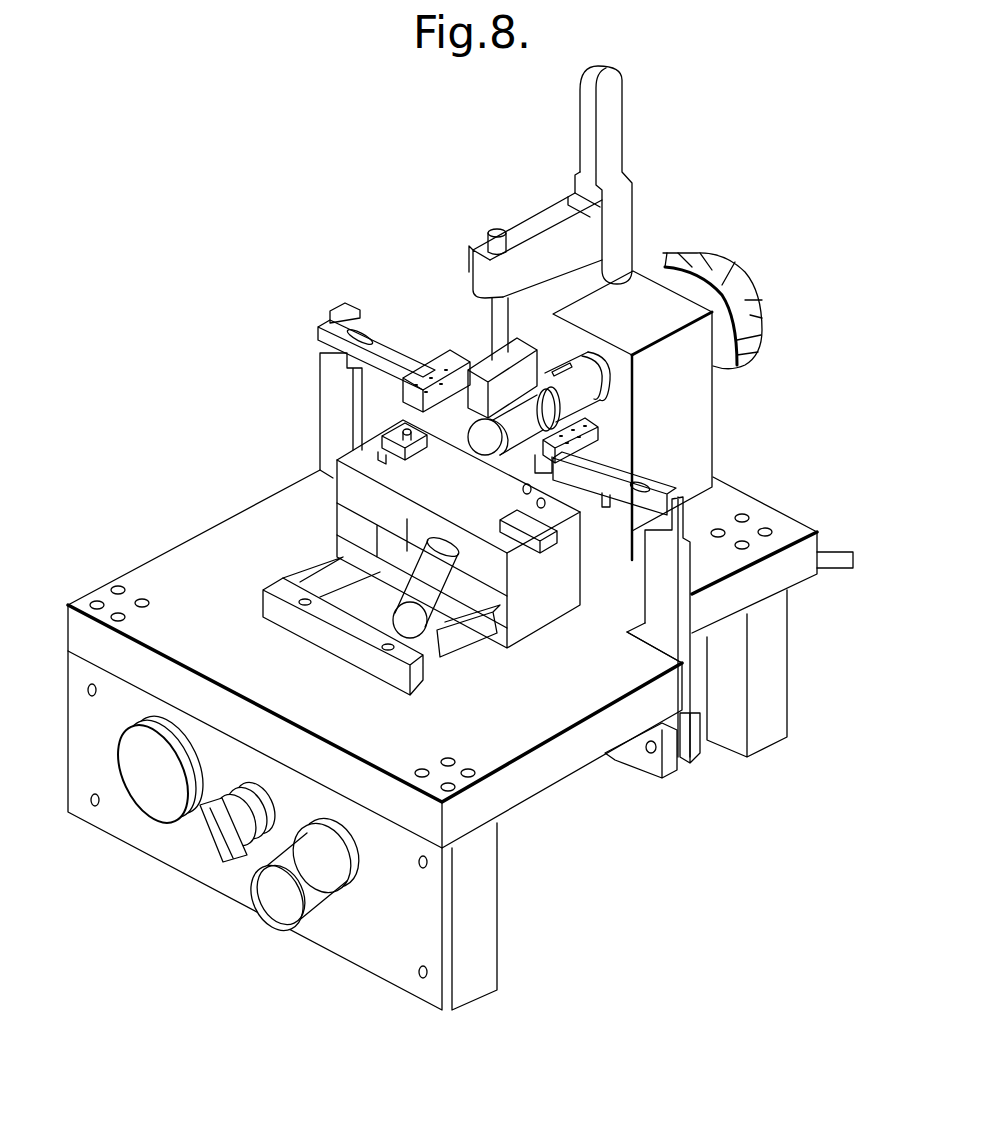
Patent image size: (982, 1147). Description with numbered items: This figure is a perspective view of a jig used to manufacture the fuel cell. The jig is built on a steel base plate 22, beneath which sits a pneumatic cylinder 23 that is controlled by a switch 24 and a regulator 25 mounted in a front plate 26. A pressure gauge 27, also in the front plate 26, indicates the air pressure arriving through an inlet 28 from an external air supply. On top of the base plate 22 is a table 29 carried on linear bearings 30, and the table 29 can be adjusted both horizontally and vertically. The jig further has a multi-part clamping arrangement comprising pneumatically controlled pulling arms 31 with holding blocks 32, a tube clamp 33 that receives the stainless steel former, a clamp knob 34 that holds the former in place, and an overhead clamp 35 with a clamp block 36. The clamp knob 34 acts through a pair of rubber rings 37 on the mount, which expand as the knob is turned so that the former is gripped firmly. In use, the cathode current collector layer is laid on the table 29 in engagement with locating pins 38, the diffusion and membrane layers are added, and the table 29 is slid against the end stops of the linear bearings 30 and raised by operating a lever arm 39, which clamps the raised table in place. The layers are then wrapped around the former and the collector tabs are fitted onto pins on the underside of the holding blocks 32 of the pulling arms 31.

The base plate 22 is at (522, 780).
The pneumatic cylinder 23 is at (622, 763).
The switch 24 is at (217, 843).
The regulator 25 is at (267, 900).
The front plate 26 is at (377, 947).
The pressure gauge 27 is at (157, 788).
The inlet 28 is at (842, 556).
The table 29 is at (350, 505).
The linear bearings 30 is at (338, 578).
The pulling arms 31 is at (336, 389).
The holding blocks 32 is at (447, 362).
The tube clamp 33 is at (472, 436).
The clamp knob 34 is at (743, 290).
The overhead clamp 35 is at (490, 244).
The clamp block 36 is at (492, 330).
The rubber rings 37 is at (512, 440).
The locating pins 38 is at (410, 445).
The lever arm 39 is at (403, 615).